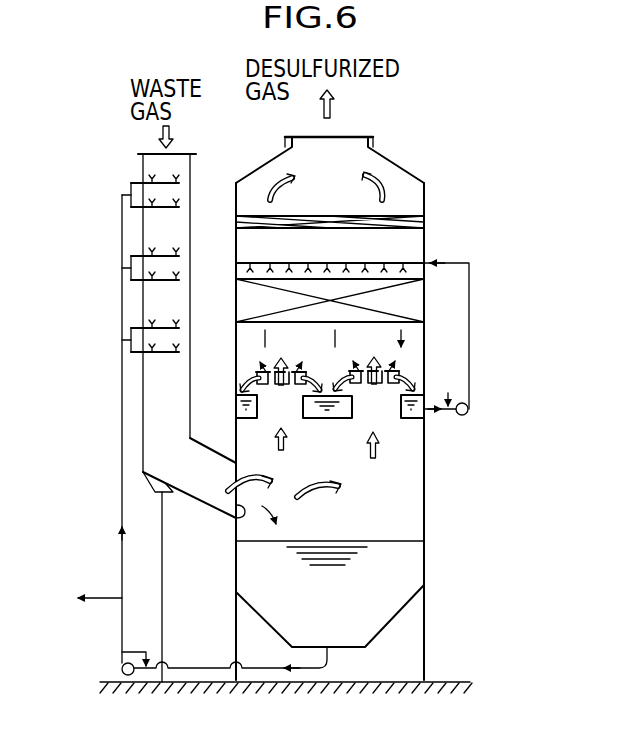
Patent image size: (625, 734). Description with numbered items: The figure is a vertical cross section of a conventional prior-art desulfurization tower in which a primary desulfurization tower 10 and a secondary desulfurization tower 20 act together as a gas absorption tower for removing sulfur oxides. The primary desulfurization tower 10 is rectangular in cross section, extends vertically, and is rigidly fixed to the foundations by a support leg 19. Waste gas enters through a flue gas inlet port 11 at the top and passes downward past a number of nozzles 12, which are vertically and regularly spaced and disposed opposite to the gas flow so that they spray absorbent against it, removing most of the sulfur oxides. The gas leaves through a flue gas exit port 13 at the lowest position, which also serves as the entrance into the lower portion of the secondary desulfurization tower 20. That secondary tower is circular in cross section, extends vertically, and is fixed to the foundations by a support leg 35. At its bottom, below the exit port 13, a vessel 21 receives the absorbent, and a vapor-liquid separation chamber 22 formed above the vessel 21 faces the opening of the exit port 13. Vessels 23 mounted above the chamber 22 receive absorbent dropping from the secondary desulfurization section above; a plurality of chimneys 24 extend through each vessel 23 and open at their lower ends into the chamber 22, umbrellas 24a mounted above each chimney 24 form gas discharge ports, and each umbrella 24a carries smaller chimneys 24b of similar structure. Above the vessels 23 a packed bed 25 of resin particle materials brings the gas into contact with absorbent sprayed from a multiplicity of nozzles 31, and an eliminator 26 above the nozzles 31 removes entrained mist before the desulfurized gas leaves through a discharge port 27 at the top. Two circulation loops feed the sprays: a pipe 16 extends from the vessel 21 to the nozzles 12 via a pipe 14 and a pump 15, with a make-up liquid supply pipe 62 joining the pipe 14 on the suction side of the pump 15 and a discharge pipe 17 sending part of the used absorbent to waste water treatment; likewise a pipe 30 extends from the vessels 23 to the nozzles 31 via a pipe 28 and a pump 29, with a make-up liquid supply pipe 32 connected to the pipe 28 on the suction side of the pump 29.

The primary desulfurization tower 10 is at (90, 294).
The flue gas inlet port 11 is at (150, 153).
The nozzles 12 is at (132, 182).
The flue gas exit port 13 is at (236, 520).
The pipe 14 is at (188, 668).
The pump 15 is at (121, 671).
The pipe 16 is at (122, 437).
The discharge pipe 17 is at (100, 598).
The support leg 19 is at (163, 596).
The secondary desulfurization tower 20 is at (524, 301).
The vessel 21 is at (404, 580).
The vapor-liquid separation chamber 22 is at (404, 510).
The vessels 23 is at (337, 430).
The chimneys 24 is at (285, 411).
The umbrellas 24a is at (281, 392).
The smaller chimneys 24b is at (278, 360).
The packed bed 25 is at (414, 302).
The eliminator 26 is at (410, 216).
The discharge port 27 is at (355, 137).
The pipe 28 is at (432, 406).
The pump 29 is at (469, 408).
The pipe 30 is at (469, 341).
The nozzles 31 is at (410, 264).
The make-up liquid supply pipe 32 is at (449, 393).
The support leg 35 is at (425, 637).
The make-up liquid supply pipe 62 is at (122, 651).